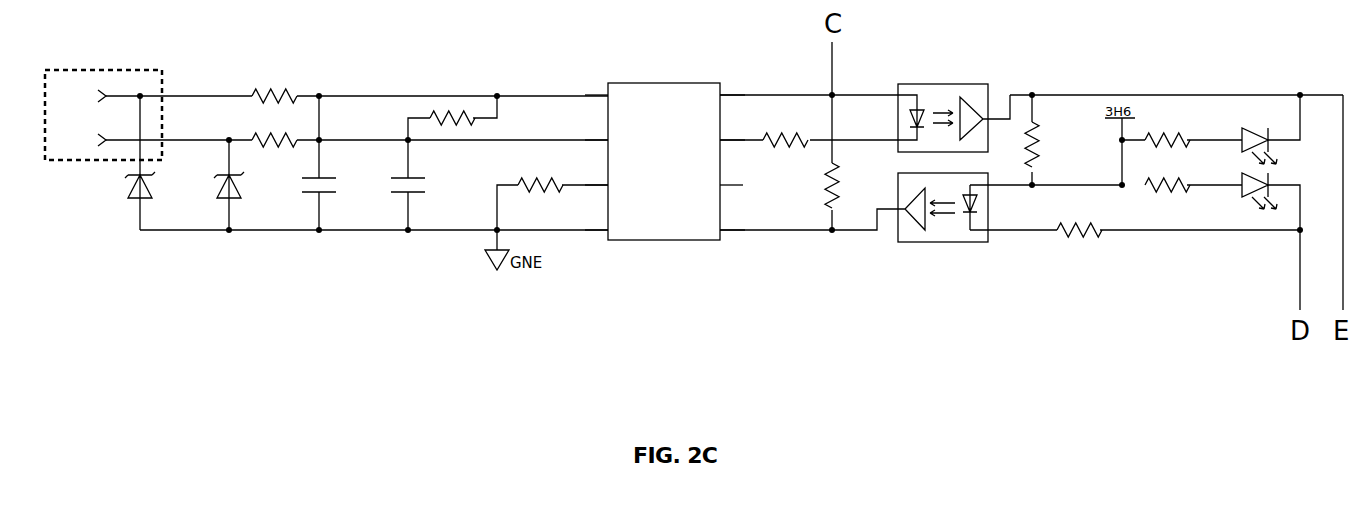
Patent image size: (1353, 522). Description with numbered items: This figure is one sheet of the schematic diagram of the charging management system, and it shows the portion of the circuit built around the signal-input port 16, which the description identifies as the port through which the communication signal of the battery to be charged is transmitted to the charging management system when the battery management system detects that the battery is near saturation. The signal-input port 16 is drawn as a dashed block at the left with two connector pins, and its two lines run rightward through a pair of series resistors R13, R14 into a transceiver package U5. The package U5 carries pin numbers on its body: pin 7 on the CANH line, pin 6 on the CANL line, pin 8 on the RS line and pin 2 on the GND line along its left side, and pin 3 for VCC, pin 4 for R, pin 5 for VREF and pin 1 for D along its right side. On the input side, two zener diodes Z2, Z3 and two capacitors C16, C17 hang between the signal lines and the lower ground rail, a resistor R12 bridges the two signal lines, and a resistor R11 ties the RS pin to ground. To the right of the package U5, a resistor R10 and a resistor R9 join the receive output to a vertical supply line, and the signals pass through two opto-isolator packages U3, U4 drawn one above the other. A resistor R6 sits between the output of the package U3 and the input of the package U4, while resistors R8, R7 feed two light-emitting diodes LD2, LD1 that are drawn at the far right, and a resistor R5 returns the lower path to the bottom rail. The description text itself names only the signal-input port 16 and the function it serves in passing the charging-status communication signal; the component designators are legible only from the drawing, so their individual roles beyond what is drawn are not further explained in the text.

The signal-input port 16 is at (103, 70).
The CAN transceiver U5 is at (665, 152).
The optocoupler U3 is at (947, 108).
The optocoupler U4 is at (941, 199).
The resistor R5 is at (1078, 219).
The resistor R6 is at (1045, 140).
The resistor R7 is at (1167, 176).
The resistor R8 is at (1167, 131).
The resistor R9 is at (814, 185).
The resistor R10 is at (785, 129).
The resistor R11 is at (552, 196).
The resistor R12 is at (432, 118).
The resistor R13 is at (257, 88).
The resistor R14 is at (257, 132).
The capacitor C16 is at (424, 185).
The capacitor C17 is at (336, 163).
The zener diode Z2 is at (241, 185).
The zener diode Z3 is at (151, 163).
The light emitting diode LD1 is at (1237, 189).
The light emitting diode LD2 is at (1237, 144).
The U5 pin 1 (D) 1 is at (732, 221).
The U5 pin 2 (GND) 2 is at (596, 222).
The U5 pin 3 (VCC) 3 is at (732, 86).
The U5 pin 4 (R) 4 is at (732, 131).
The U5 pin 5 (VREF) 5 is at (731, 176).
The U5 pin 6 (CANL) 6 is at (596, 132).
The U5 pin 7 (CANH) 7 is at (596, 87).
The U5 pin 8 (RS) 8 is at (596, 177).